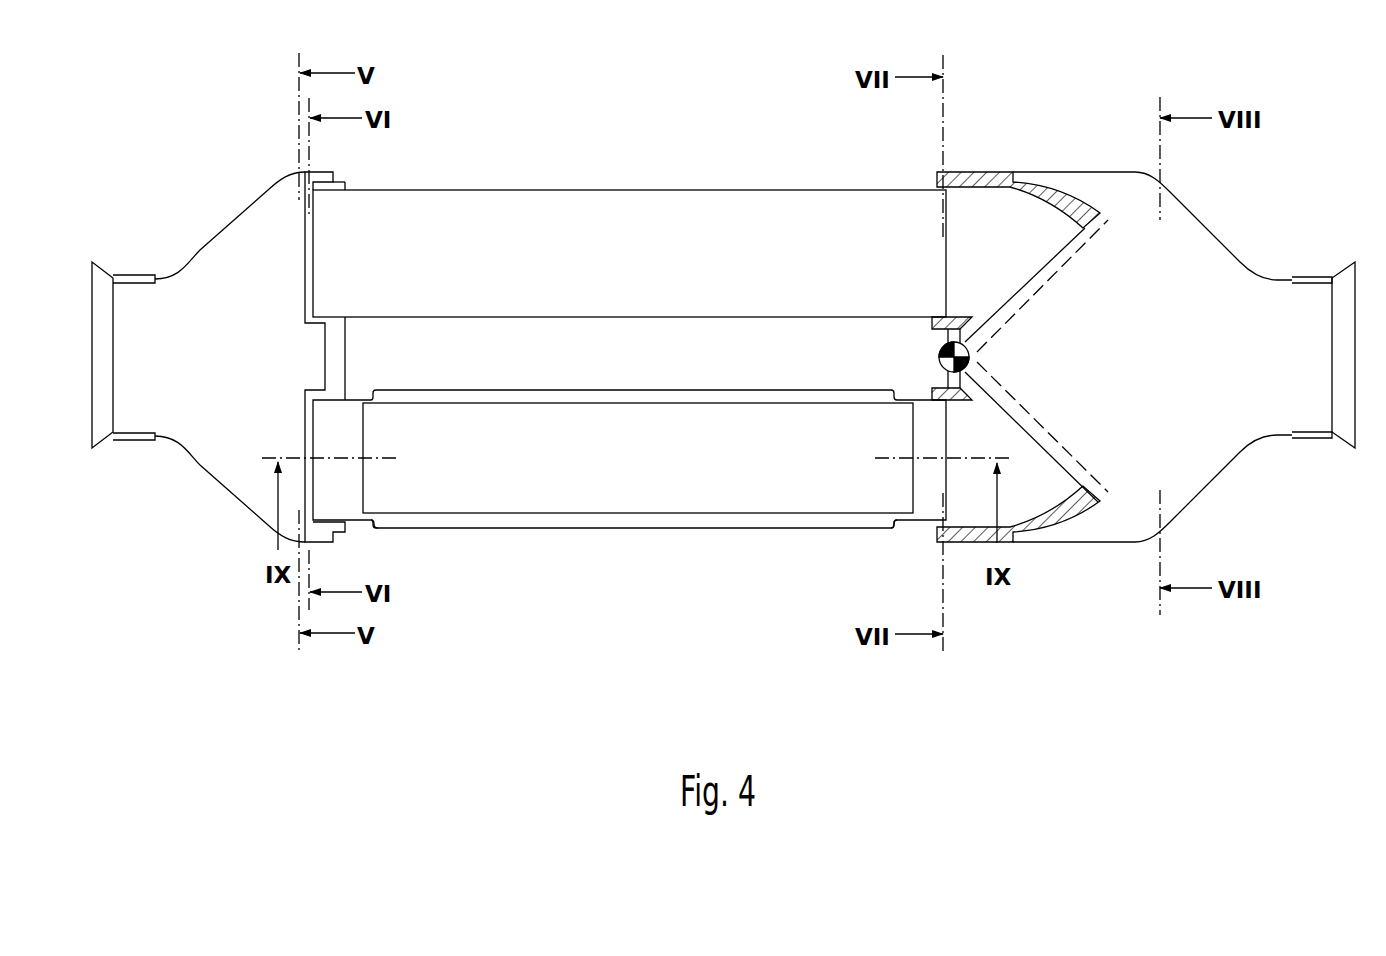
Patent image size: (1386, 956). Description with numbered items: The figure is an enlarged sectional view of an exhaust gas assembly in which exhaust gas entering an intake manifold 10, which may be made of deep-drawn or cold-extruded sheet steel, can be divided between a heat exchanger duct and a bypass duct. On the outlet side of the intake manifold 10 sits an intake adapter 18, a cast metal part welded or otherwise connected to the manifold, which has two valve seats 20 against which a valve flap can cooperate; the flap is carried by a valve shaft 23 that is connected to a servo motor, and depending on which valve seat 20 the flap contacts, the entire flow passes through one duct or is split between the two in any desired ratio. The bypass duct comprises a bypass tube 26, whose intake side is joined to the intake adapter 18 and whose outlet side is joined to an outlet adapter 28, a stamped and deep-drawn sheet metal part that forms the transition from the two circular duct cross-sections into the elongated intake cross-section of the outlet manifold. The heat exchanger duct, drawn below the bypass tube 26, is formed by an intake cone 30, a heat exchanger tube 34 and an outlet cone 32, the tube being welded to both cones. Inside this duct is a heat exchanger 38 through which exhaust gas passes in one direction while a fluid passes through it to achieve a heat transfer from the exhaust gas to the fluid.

The intake manifold 10 is at (1220, 453).
The intake adapter 18 is at (958, 542).
The valve seats 20 is at (1063, 257).
The valve shaft 23 is at (940, 362).
The bypass tube 26 is at (556, 190).
The outlet adapter 28 is at (328, 357).
The intake cone 30 is at (902, 522).
The outlet cone 32 is at (355, 520).
The heat exchanger tube 34 is at (577, 530).
The heat exchanger 38 is at (640, 480).